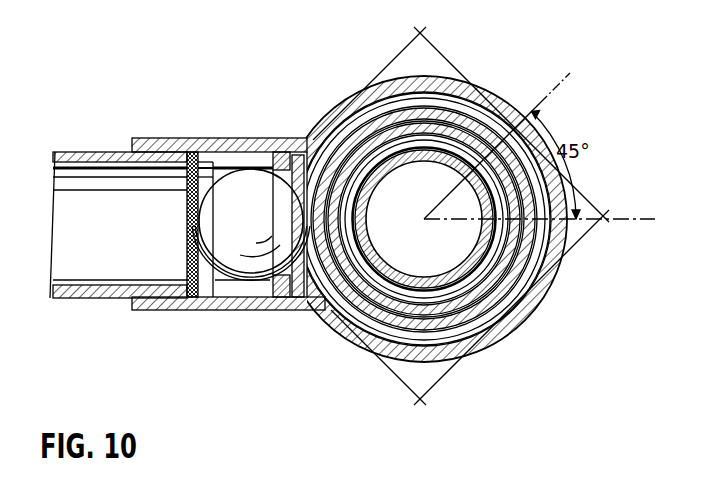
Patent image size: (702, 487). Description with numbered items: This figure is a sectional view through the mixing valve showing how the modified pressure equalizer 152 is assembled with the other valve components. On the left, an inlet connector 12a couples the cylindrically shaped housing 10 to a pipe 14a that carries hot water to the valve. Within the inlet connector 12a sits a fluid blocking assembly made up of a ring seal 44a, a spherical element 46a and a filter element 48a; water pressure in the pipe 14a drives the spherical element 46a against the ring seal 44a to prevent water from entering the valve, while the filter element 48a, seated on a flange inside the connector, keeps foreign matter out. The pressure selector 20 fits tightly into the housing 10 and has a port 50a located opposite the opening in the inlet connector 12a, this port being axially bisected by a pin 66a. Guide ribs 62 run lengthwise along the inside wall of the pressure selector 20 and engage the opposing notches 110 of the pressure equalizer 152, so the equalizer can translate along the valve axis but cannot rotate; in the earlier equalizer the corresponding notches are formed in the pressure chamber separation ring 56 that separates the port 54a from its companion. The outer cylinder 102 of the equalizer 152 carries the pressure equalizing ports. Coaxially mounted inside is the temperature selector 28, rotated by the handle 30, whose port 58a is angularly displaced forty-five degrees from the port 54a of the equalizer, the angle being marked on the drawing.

The housing 10 is at (548, 246).
The inlet connector 12a is at (207, 138).
The pipe 14a is at (80, 150).
The pressure selector 20 is at (485, 157).
The temperature selector 28 is at (372, 258).
The handle 30 is at (419, 389).
The ring seal 44a is at (282, 152).
The spherical element 46a is at (227, 223).
The filter element 48a is at (186, 211).
The port 50a is at (314, 203).
The port 54a is at (548, 292).
The pressure chamber separation ring 56 is at (513, 307).
The port 58a is at (433, 157).
The guide rib 62 is at (447, 80).
The pin 66a is at (298, 227).
The outer cylinder 102 is at (443, 310).
The notch 110 is at (396, 136).
The pressure equalizer 152 is at (487, 325).